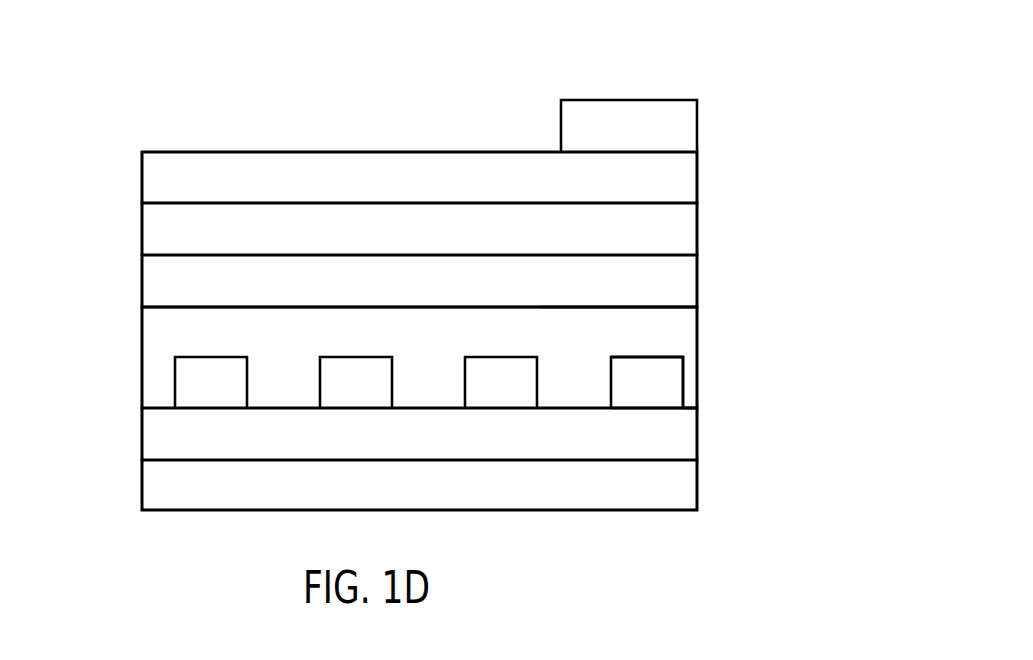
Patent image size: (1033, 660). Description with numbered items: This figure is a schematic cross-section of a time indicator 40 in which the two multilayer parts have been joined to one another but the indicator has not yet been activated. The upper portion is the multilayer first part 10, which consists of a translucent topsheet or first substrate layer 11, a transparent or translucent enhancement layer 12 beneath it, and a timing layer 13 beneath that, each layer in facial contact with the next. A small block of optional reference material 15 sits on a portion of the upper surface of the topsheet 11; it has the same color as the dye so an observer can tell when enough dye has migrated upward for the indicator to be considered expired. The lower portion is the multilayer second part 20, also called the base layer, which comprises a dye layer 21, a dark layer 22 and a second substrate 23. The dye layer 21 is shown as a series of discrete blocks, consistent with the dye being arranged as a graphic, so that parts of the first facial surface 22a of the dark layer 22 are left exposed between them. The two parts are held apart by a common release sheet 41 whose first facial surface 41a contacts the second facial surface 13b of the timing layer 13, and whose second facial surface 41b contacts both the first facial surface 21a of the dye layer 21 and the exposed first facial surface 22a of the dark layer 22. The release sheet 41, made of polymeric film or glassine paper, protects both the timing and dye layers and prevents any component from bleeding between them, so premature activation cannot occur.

The time indicator 40 is at (667, 55).
The multilayer first part 10 is at (68, 101).
The first substrate layer 11 is at (142, 178).
The enhancement layer 12 is at (142, 230).
The timing layer 13 is at (142, 280).
The second facial surface of timing layer 13b is at (604, 302).
The reference material 15 is at (562, 123).
The release sheet 41 is at (142, 333).
The first facial surface of release sheet 41a is at (657, 310).
The second facial surface of release sheet 41b is at (668, 357).
The multilayer second part 20 is at (68, 348).
The dye layer 21 is at (174, 385).
The first facial surface of dye layer 21a is at (652, 359).
The dark layer 22 is at (142, 433).
The first facial surface of dark layer 22a is at (691, 413).
The second substrate 23 is at (142, 487).